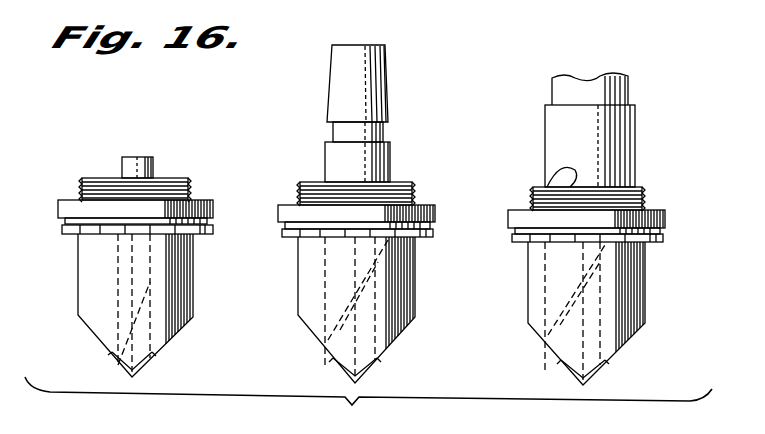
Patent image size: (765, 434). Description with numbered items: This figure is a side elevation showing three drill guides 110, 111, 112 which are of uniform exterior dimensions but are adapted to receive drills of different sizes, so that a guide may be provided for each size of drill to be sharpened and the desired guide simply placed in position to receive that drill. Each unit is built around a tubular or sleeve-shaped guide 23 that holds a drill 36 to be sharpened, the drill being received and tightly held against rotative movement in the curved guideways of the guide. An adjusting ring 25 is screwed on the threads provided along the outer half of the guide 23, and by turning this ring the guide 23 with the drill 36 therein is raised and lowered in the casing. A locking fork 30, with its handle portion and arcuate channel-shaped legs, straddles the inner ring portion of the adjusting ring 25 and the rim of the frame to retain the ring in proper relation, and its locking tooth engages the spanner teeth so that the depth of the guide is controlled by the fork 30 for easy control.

The drill 36 is at (146, 156).
The guide 23 is at (177, 179).
The adjusting ring 25 is at (206, 200).
The locking fork 30 is at (213, 229).
The drill guide 110 is at (195, 300).
The drill guide 111 is at (417, 302).
The drill guide 112 is at (647, 304).